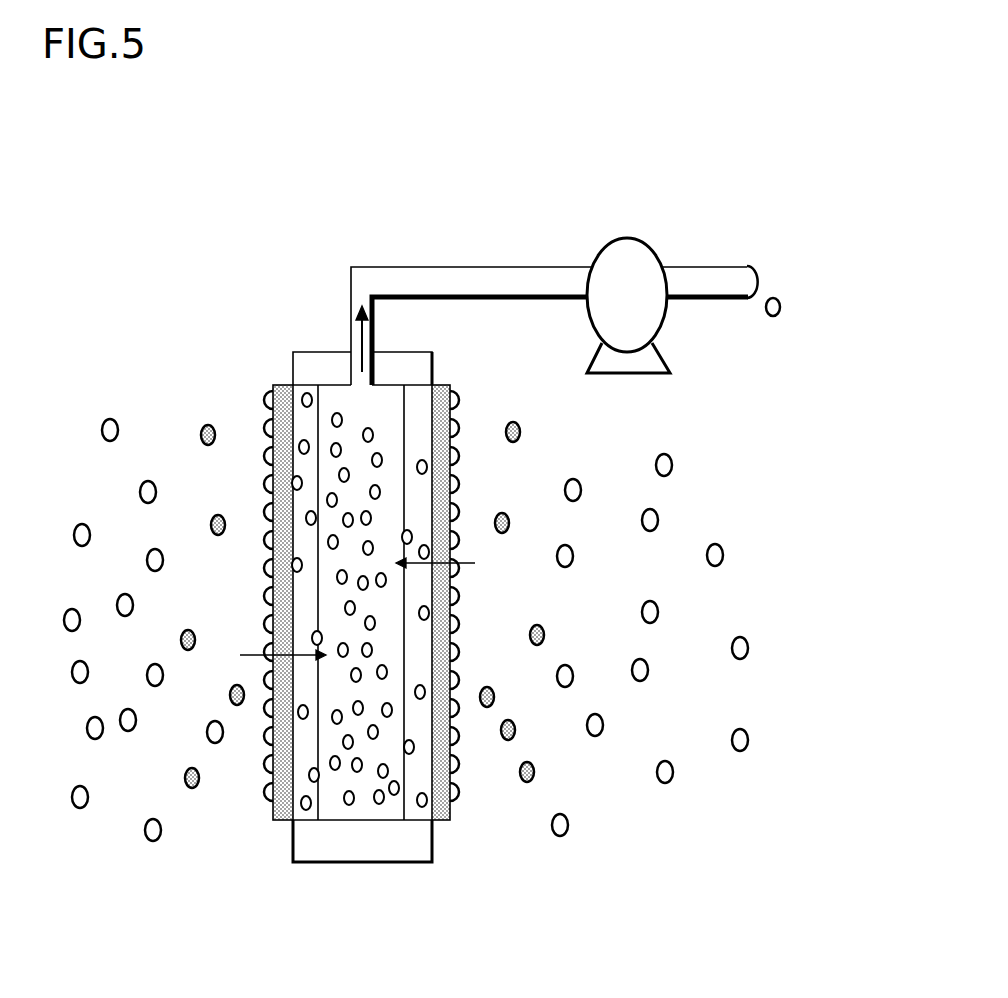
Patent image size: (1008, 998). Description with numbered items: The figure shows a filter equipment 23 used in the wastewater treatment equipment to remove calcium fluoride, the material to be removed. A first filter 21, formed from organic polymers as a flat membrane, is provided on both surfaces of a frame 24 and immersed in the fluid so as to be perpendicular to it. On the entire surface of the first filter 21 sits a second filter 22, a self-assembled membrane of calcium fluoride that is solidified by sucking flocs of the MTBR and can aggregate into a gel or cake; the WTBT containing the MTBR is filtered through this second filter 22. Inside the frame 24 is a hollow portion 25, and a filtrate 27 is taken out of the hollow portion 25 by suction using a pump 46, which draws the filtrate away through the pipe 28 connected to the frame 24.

The first filter 21 is at (300, 390).
The second filter 22 is at (438, 800).
The filter equipment 23 is at (606, 772).
The frame 24 is at (363, 845).
The hollow portion 25 is at (332, 803).
The filtrate 27 is at (753, 271).
The gas pipe 28 is at (541, 267).
The pump 46 is at (646, 240).